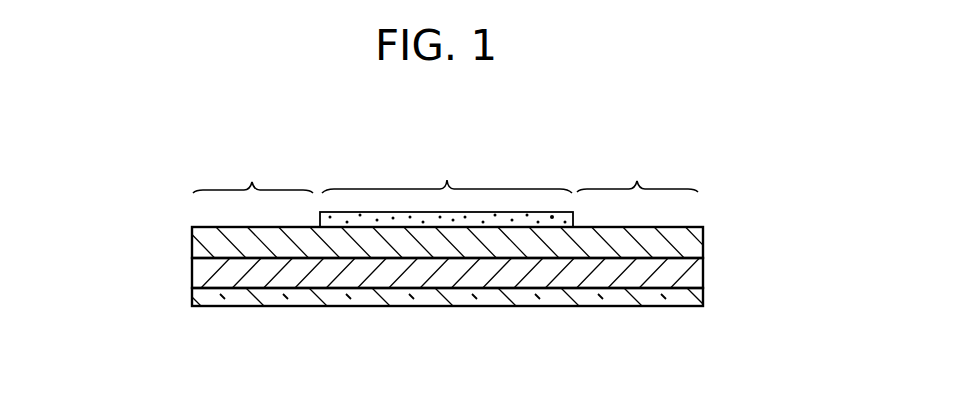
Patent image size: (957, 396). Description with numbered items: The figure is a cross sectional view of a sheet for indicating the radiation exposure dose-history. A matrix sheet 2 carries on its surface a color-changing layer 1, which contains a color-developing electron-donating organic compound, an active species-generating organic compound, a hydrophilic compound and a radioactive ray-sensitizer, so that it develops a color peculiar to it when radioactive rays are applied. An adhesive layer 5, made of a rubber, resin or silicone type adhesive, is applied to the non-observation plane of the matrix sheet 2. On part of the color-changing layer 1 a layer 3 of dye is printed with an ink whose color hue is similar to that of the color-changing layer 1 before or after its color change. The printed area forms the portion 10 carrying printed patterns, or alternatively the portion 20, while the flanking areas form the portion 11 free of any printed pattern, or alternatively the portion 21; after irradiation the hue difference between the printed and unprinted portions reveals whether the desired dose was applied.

The color-changing layer 1 is at (218, 247).
The matrix sheet 2 is at (203, 278).
The adhesive layer 5 is at (678, 297).
The dye layer 3 is at (552, 216).
The portion carrying printed patterns 10 is at (447, 154).
The portion carrying printed patterns 20 is at (447, 180).
The portion free of any printed pattern 11 is at (470, 154).
The portion free of any printed pattern 21 is at (252, 182).